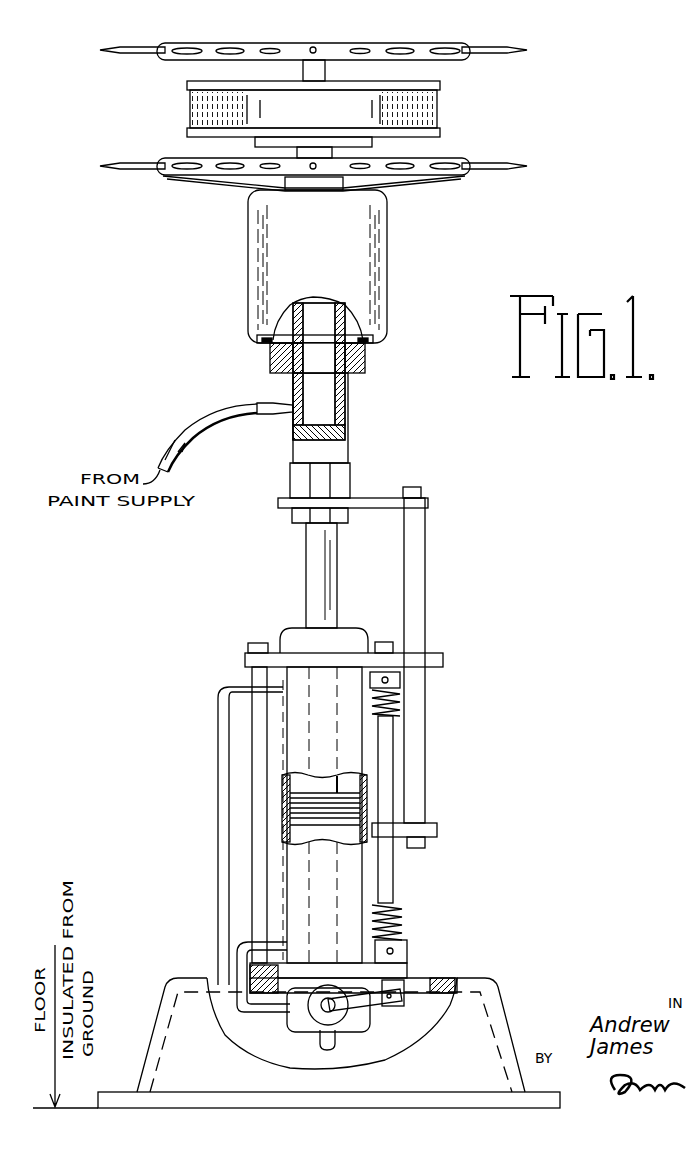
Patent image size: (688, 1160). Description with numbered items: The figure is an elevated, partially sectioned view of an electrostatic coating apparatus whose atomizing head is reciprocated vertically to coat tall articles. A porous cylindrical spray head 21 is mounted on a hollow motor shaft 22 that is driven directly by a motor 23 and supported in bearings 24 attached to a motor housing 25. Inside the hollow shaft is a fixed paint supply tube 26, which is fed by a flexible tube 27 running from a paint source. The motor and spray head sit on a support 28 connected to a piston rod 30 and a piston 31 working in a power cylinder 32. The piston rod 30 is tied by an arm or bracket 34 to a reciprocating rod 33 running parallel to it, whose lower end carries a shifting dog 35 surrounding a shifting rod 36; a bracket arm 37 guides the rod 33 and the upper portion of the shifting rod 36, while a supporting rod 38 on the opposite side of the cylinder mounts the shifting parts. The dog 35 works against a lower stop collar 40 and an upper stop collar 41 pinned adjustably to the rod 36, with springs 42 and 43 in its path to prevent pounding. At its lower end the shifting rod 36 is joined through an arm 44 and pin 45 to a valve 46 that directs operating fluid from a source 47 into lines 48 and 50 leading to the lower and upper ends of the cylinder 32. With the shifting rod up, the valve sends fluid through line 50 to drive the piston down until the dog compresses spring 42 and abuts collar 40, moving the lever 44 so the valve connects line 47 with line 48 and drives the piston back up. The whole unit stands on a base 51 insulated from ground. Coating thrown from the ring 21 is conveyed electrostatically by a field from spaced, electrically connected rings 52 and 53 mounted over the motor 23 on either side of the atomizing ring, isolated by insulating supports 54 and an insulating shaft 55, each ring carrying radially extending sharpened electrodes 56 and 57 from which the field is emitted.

The porous cylindrical spray head 21 is at (451, 113).
The hollow motor shaft 22 is at (333, 153).
The motor 23 is at (398, 242).
The bearings 24 is at (368, 367).
The motor housing 25 is at (375, 335).
The paint supply tube 26 is at (325, 410).
The flexible tube 27 is at (257, 408).
The support 28 is at (345, 432).
The piston rod 30 is at (338, 583).
The piston 31 is at (287, 790).
The power cylinder 32 is at (283, 828).
The reciprocating rod 33 is at (425, 612).
The arm or bracket 34 is at (395, 508).
The shifting dog 35 is at (437, 830).
The shifting rod 36 is at (393, 882).
The bracket arm 37 is at (443, 660).
The supporting rod 38 is at (252, 677).
The lower stop collar 40 is at (407, 950).
The upper stop collar 41 is at (400, 680).
The spring 42 is at (402, 918).
The spring 43 is at (400, 714).
The arm 44 is at (403, 996).
The pin 45 is at (389, 1008).
The valve 46 is at (340, 1022).
The source 47 is at (322, 1045).
The line 48 is at (237, 942).
The line 50 is at (218, 893).
The base 51 is at (497, 990).
The ring 52 is at (185, 160).
The ring 53 is at (175, 43).
The insulating supports 54 is at (224, 192).
The insulating shaft 55 is at (327, 70).
The sharpened electrodes 56 is at (525, 166).
The sharpened electrodes 57 is at (525, 50).